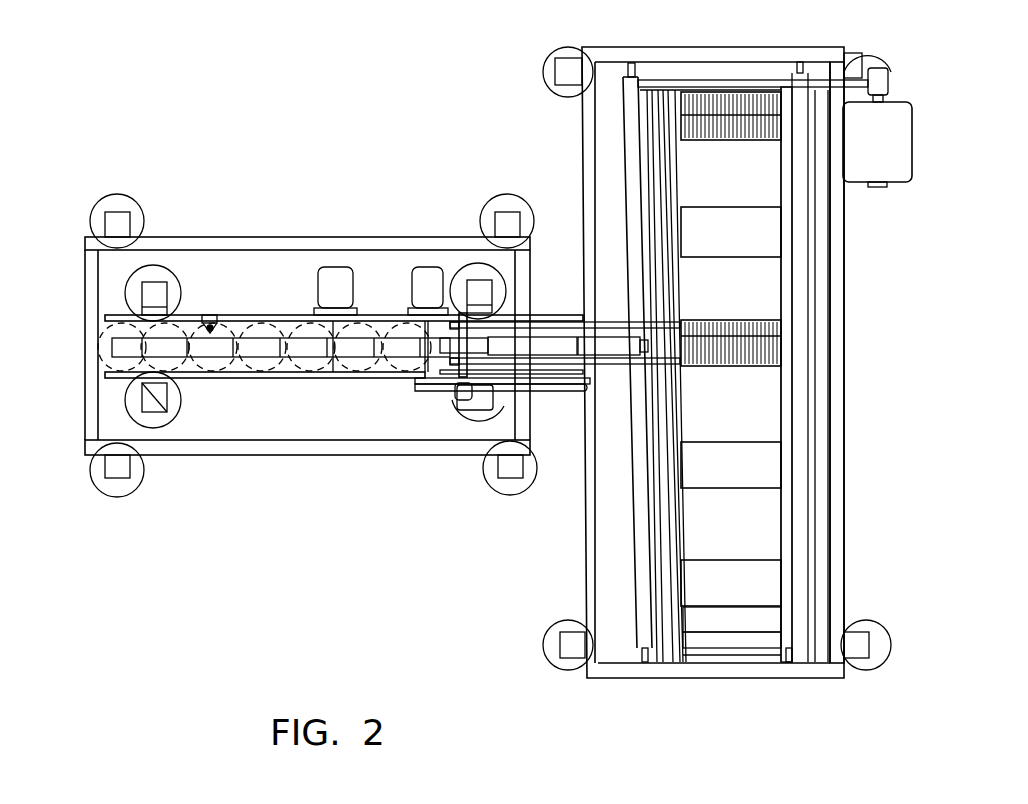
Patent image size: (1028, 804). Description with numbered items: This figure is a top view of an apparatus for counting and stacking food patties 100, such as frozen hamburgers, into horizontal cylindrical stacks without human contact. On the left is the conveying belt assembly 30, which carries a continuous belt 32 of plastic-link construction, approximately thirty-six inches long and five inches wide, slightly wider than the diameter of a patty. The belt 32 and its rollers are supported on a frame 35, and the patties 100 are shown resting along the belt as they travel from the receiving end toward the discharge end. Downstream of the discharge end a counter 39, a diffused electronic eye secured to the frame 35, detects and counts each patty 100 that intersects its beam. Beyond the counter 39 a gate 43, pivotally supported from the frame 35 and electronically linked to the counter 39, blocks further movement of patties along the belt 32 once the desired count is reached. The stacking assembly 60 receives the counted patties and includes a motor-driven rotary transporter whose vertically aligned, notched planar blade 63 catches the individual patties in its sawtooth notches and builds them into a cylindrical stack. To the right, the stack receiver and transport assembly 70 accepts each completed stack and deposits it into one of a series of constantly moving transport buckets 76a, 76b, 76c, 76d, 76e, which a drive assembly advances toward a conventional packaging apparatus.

The conveying belt assembly 30 is at (276, 482).
The belt 32 is at (237, 367).
The frame 35 is at (175, 242).
The counter 39 is at (213, 324).
The gate 43 is at (460, 318).
The stacking assembly 60 is at (560, 427).
The blade 63 is at (838, 493).
The stack receiver and transport assembly 70 is at (901, 282).
The transport bucket 76a is at (775, 88).
The transport bucket 76b is at (781, 222).
The transport bucket 76c is at (781, 373).
The transport bucket 76d is at (783, 443).
The transport bucket 76e is at (783, 575).
The food patties 100 is at (262, 325).